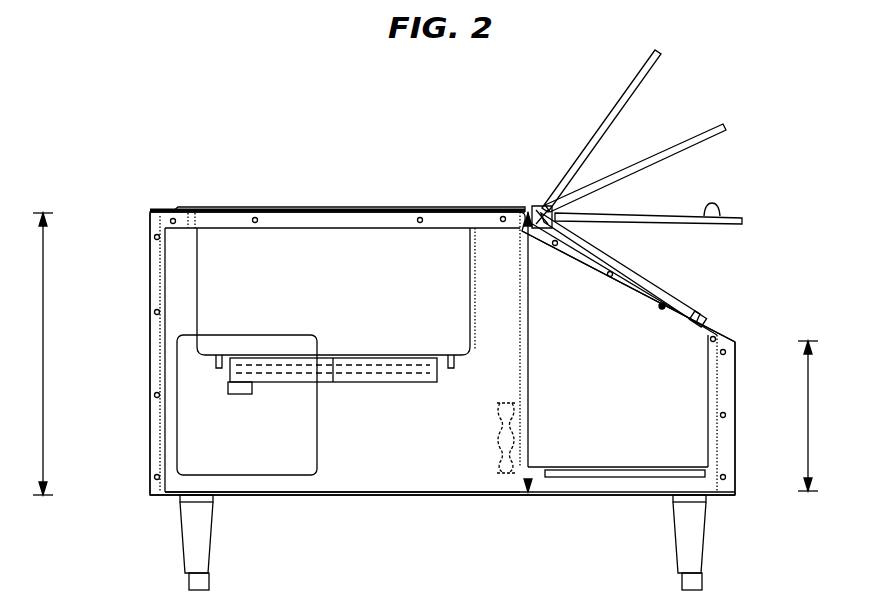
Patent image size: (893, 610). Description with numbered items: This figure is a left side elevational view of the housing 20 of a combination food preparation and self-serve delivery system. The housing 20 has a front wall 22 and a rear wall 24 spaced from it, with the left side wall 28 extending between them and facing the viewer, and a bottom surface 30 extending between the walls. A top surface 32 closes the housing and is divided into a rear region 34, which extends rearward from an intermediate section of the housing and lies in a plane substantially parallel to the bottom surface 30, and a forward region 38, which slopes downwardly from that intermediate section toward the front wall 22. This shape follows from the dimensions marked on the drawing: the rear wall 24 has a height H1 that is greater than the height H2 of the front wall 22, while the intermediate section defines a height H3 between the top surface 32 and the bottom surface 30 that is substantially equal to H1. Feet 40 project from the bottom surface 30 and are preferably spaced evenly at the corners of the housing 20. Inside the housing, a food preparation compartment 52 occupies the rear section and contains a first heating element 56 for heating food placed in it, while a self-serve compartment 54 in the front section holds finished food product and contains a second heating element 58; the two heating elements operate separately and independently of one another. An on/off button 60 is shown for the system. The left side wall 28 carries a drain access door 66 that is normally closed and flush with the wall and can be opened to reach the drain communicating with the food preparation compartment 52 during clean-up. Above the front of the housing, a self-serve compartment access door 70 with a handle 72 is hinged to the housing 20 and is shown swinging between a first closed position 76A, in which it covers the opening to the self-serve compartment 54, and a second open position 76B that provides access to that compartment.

The housing 20 is at (118, 249).
The front wall 22 is at (738, 404).
The rear wall 24 is at (150, 298).
The left side wall 28 is at (377, 438).
The bottom surface 30 is at (392, 497).
The top surface 32 is at (215, 208).
The rear region 34 is at (300, 198).
The forward region 38 is at (668, 260).
The feet 40 is at (190, 532).
The food preparation compartment 52 is at (357, 296).
The self-serve compartment 54 is at (605, 428).
The first heating element 56 is at (385, 358).
The second heating element 58 is at (495, 416).
The on/off button 60 is at (240, 394).
The drain access door 66 is at (271, 460).
The self-serve compartment access door 70 is at (745, 221).
The handle 72 is at (720, 200).
The first closed position 76A is at (704, 320).
The second open position 76B is at (660, 62).
The height of rear wall H1 is at (45, 355).
The height of front wall H2 is at (811, 398).
The height of intermediate section H3 is at (540, 357).